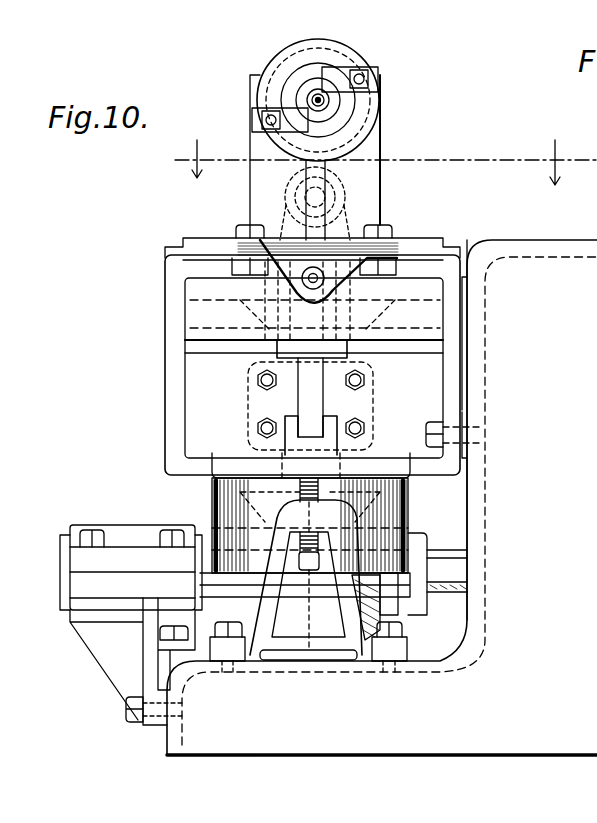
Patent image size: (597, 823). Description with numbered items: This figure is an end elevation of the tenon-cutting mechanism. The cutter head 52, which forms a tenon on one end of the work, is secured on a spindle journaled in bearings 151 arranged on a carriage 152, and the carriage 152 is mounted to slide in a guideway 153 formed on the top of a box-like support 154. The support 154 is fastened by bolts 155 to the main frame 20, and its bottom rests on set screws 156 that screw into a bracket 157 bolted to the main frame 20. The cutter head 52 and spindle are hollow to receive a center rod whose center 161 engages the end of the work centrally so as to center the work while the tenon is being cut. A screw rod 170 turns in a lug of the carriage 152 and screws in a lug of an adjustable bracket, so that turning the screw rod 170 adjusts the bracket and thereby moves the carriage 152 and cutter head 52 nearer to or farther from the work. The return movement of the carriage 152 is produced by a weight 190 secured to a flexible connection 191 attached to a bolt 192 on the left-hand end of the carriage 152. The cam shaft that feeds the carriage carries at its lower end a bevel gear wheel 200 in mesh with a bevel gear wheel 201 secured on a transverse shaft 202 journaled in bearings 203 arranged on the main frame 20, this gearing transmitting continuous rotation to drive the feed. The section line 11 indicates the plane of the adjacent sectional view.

The section line 11 is at (374, 162).
The main frame 20 is at (382, 497).
The cutter head 52 is at (335, 60).
The bearings 151 is at (250, 85).
The carriage 152 is at (399, 248).
The guideway 153 is at (423, 258).
The box-like support 154 is at (195, 380).
The bolts 155 is at (432, 422).
The set screws 156 is at (300, 487).
The bracket 157 is at (273, 617).
The center 161 is at (324, 100).
The screw rod 170 is at (365, 187).
The weight 190 is at (408, 502).
The flexible connection 191 is at (307, 393).
The bolt 192 is at (295, 283).
The bevel gear wheel 200 is at (245, 491).
The bevel gear wheel 201 is at (380, 633).
The transverse shaft 202 is at (447, 598).
The bearings 203 is at (120, 552).